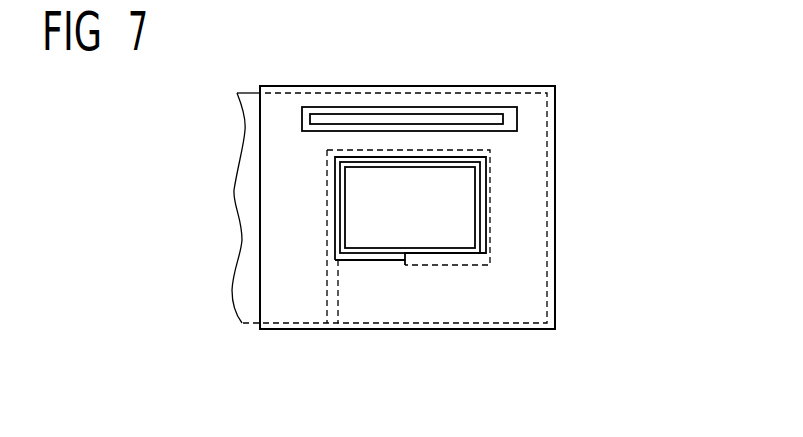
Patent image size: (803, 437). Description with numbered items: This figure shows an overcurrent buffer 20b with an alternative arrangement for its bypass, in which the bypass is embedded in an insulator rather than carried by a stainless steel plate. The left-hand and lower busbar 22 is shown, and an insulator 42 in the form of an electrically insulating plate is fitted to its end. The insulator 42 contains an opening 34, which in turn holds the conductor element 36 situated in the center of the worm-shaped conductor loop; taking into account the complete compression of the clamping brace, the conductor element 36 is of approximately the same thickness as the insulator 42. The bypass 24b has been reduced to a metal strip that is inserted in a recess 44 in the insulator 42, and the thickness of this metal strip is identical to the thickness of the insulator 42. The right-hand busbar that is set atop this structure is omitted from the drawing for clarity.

The overcurrent buffer 20b is at (558, 73).
The busbar 22 is at (247, 312).
The bypass 24b is at (407, 114).
The opening 34 is at (488, 168).
The conductor element 36 is at (383, 168).
The insulator 42 is at (555, 282).
The recess 44 is at (517, 117).